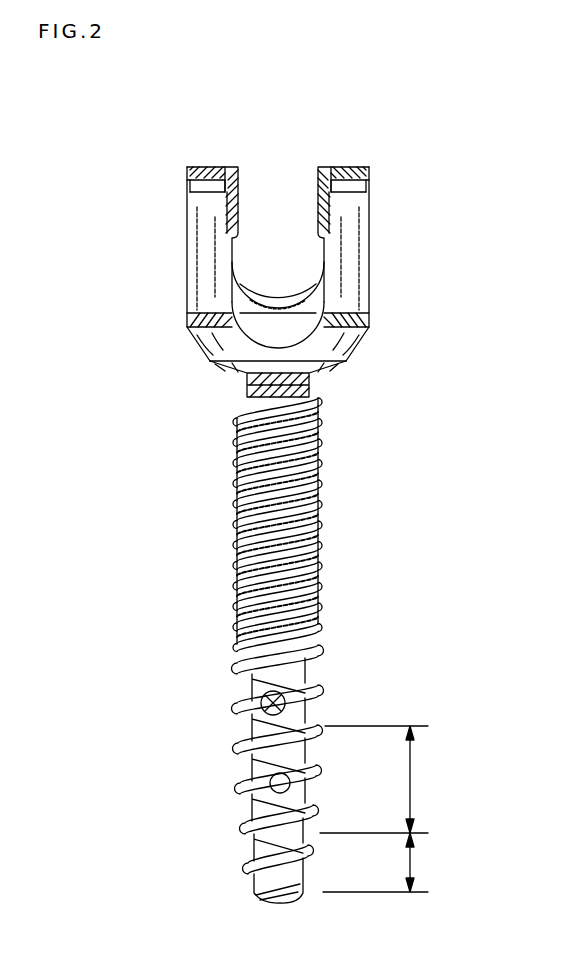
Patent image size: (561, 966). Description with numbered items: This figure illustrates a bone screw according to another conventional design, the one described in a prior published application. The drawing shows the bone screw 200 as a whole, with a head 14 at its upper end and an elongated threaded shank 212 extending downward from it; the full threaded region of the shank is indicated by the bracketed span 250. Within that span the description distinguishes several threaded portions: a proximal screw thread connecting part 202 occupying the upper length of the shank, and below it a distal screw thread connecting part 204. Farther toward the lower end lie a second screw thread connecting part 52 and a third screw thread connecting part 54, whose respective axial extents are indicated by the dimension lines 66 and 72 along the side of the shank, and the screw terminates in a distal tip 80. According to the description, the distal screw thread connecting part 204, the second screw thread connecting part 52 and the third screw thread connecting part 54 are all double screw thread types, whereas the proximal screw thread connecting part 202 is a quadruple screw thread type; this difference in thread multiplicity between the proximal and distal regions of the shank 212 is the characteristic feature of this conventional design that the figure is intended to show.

The bone screw assembly 200 is at (385, 187).
The tulip head 14 is at (347, 245).
The screw shank 212 is at (419, 526).
The threaded region 250 is at (208, 408).
The proximal screw thread connecting part 202 is at (329, 408).
The distal screw thread connecting part 204 is at (329, 608).
The second screw thread connecting part 52 is at (320, 807).
The length of distal portion 66 is at (413, 775).
The third screw thread connecting part 54 is at (315, 882).
The length of tip portion 72 is at (413, 865).
The distal tip 80 is at (300, 905).